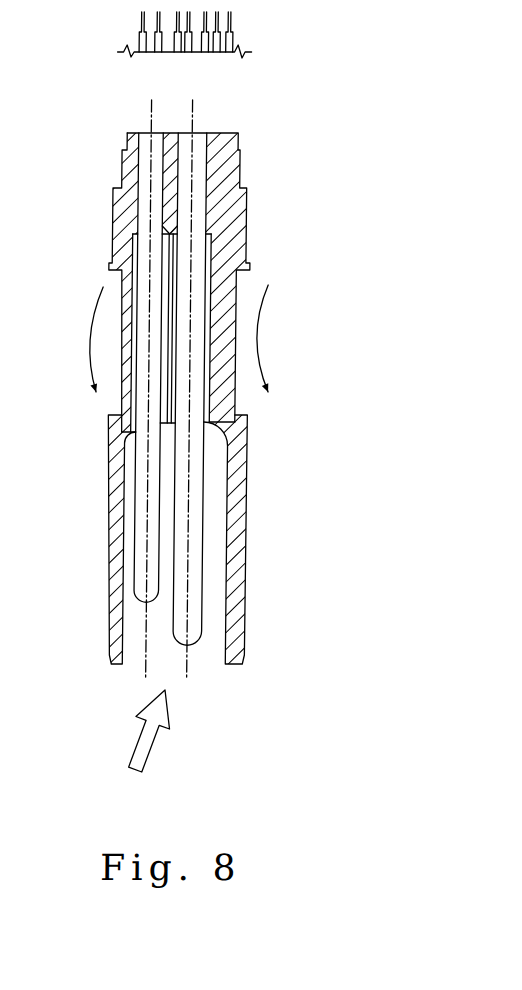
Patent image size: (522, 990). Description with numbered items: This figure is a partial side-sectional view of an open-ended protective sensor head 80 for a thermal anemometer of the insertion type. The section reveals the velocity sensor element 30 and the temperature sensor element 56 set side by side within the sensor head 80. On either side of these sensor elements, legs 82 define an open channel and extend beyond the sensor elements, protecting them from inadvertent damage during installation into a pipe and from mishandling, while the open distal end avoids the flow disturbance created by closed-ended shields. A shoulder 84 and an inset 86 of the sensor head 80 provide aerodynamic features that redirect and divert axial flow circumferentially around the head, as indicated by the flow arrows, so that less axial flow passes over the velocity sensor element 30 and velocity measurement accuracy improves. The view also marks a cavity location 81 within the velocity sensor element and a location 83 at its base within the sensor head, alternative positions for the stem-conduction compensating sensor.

The sensor head 80 is at (215, 390).
The location 81 is at (216, 305).
The legs 82 is at (111, 478).
The location 83 is at (208, 212).
The shoulder 84 is at (212, 362).
The inset 86 is at (210, 348).
The temperature sensor element 56 is at (137, 544).
The velocity sensor element 30 is at (194, 575).